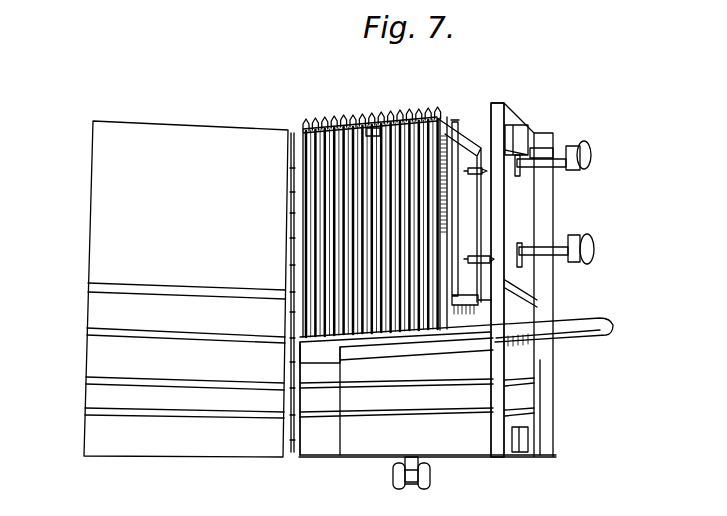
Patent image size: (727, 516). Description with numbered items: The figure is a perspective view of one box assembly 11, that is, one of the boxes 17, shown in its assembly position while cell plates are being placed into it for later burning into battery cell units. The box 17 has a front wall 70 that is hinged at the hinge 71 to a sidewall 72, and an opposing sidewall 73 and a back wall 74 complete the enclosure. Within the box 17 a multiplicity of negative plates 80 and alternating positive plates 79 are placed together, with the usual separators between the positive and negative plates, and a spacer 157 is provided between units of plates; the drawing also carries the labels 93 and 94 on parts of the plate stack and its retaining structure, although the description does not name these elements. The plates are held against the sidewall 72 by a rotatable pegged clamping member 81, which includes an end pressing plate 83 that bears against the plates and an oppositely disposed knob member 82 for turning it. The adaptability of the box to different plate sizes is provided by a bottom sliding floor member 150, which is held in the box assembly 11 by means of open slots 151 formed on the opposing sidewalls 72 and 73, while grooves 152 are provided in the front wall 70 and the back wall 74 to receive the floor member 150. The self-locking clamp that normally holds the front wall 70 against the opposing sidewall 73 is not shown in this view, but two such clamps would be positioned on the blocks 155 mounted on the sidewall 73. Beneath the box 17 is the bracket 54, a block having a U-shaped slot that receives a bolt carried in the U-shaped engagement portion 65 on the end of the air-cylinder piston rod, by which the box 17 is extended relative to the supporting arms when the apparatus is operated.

The box assembly 11 is at (558, 203).
The box 17 is at (560, 398).
The bracket 54 is at (412, 495).
The U-shaped engagement portion 65 is at (428, 467).
The front wall 70 is at (202, 248).
The hinge 71 is at (301, 126).
The sidewall 72 is at (323, 447).
The opposing sidewall 73 is at (503, 105).
The back wall 74 is at (378, 447).
The positive plates 79 is at (431, 121).
The negative plates 80 is at (291, 131).
The rotatable pegged clamping member 81 is at (557, 154).
The knob member 82 is at (586, 150).
The end pressing plate 83 is at (468, 280).
The post 93 is at (456, 119).
The fin 94 is at (309, 117).
The bottom sliding floor member 150 is at (608, 332).
The open slots 151 is at (322, 413).
The grooves 152 is at (437, 383).
The blocks 155 is at (518, 124).
The spacer 157 is at (372, 125).